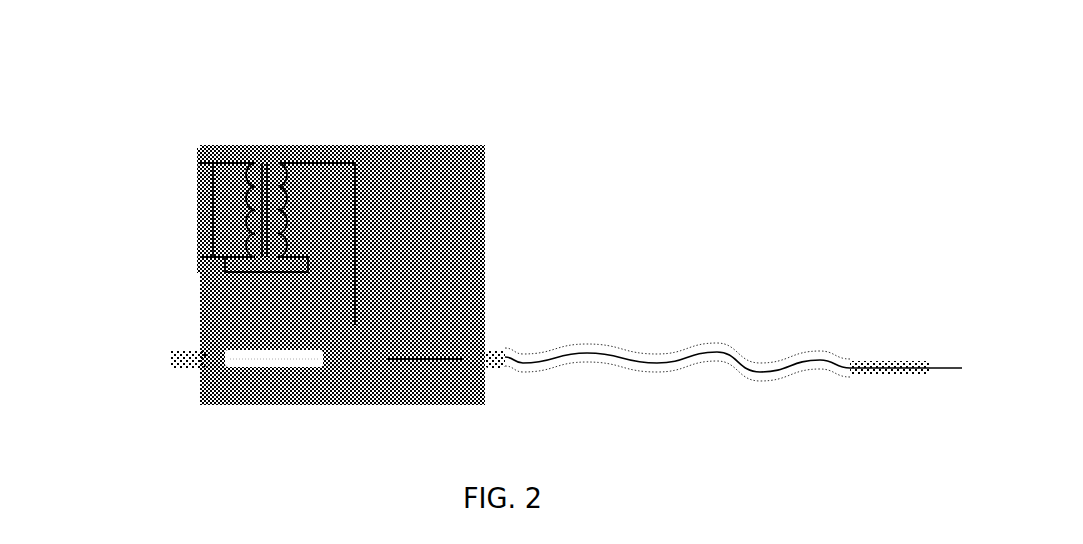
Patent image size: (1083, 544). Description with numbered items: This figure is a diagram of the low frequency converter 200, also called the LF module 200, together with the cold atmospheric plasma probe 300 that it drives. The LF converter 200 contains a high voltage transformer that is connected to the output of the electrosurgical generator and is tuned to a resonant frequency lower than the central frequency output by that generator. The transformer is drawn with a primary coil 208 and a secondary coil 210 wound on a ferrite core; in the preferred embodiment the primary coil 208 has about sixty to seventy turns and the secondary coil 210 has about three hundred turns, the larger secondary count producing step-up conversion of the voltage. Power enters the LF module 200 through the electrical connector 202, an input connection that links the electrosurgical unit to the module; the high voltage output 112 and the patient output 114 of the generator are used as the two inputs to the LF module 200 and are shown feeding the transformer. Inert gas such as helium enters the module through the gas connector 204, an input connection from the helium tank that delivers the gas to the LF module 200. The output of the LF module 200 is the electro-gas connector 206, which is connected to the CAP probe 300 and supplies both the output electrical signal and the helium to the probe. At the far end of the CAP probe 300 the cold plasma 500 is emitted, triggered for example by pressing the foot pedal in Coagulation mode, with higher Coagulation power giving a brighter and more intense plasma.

The high voltage output 112 is at (180, 164).
The patient output 114 is at (168, 257).
The low frequency converter 200 is at (447, 180).
The electrical connector 202 is at (194, 148).
The gas connector 204 is at (193, 386).
The electro-gas connector 206 is at (494, 383).
The primary coil 208 is at (242, 163).
The secondary coil 210 is at (282, 163).
The cold atmospheric plasma probe 300 is at (655, 358).
The cold plasma 500 is at (913, 364).